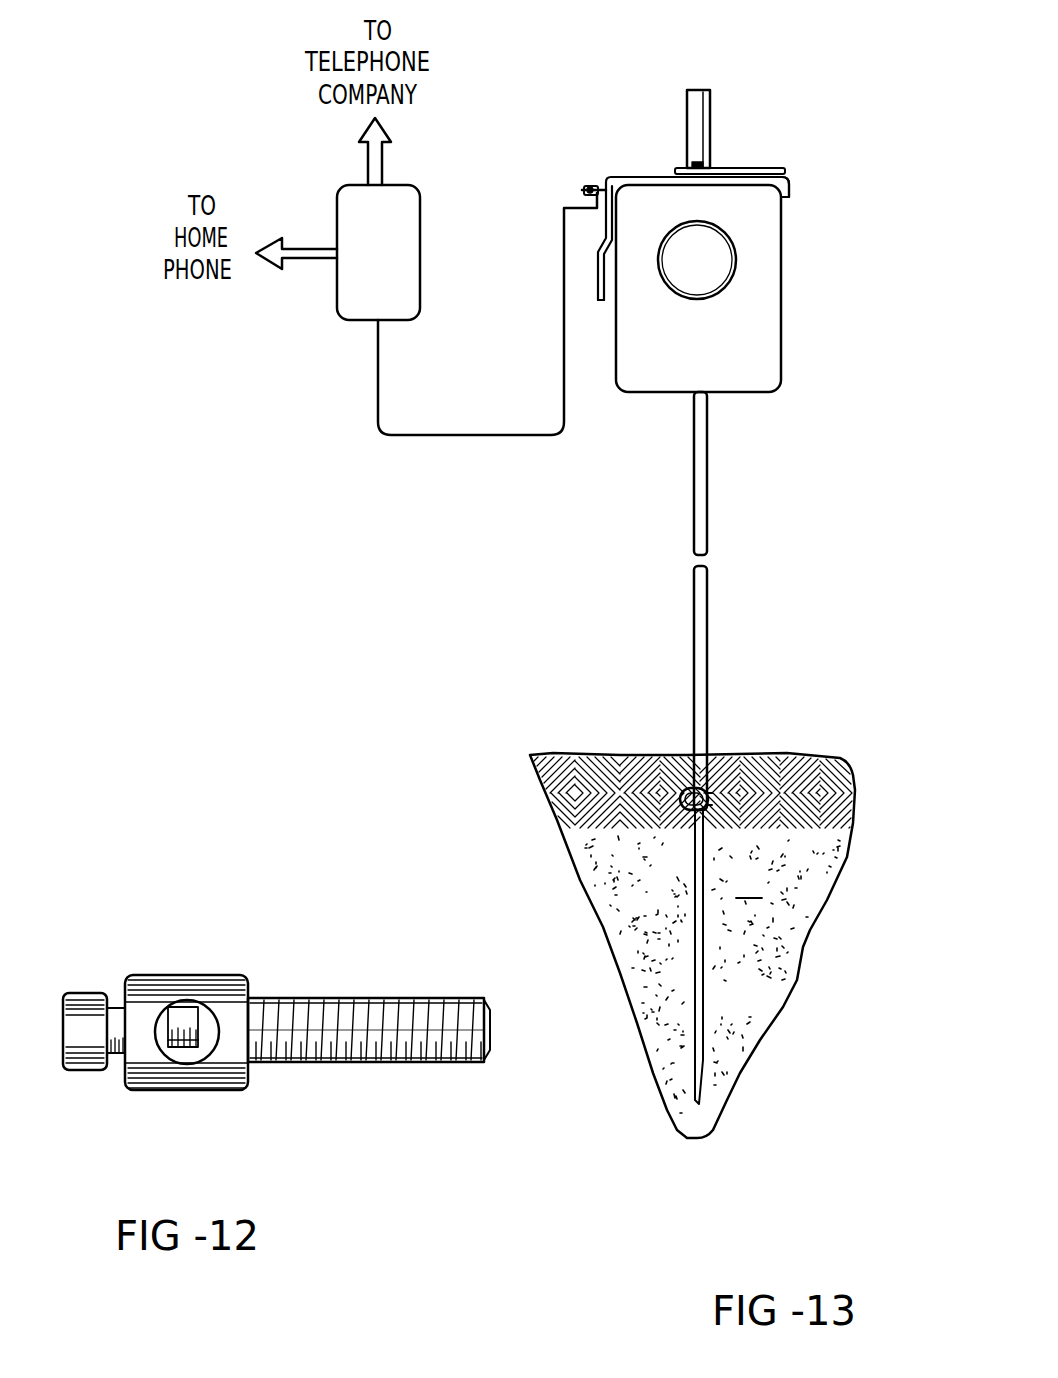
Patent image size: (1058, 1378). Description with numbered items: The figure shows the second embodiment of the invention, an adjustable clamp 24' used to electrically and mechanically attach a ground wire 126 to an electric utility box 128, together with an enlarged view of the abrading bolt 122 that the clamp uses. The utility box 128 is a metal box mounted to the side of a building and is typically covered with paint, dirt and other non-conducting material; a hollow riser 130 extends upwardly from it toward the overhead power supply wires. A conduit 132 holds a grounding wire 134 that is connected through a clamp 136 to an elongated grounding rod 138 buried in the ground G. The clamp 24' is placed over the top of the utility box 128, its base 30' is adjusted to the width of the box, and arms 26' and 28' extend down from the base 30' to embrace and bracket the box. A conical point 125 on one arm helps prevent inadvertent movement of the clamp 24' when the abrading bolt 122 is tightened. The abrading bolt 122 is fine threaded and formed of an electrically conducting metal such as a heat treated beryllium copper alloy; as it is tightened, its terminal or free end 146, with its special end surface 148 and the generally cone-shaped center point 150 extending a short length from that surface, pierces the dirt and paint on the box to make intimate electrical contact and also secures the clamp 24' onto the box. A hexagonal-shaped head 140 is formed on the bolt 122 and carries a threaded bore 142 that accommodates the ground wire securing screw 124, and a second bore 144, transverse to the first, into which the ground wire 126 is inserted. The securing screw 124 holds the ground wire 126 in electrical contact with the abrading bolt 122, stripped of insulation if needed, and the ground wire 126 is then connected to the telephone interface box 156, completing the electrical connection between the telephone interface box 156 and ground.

In FIG. 13, the abrading bolt 122 is at (595, 185).
In FIG. 12, the abrading bolt 122 is at (357, 1062).
In FIG. 13, the ground wire securing screw 124 is at (583, 188).
In FIG. 12, the ground wire securing screw 124 is at (85, 1070).
In FIG. 13, the conical point 125 is at (783, 203).
In FIG. 13, the ground wire 126 is at (525, 437).
In FIG. 13, the electric utility box 128 is at (737, 367).
In FIG. 13, the hollow riser 130 is at (708, 81).
In FIG. 13, the conduit 132 is at (710, 625).
In FIG. 13, the grounding wire 134 is at (690, 786).
In FIG. 13, the clamp 136 is at (739, 763).
In FIG. 13, the elongated grounding rod 138 is at (700, 995).
In FIG. 12, the hexagonal-shaped head 140 is at (245, 975).
In FIG. 12, the bore 142 is at (118, 1010).
In FIG. 12, the second bore 144 is at (182, 1003).
In FIG. 12, the terminal or free end 146 is at (480, 998).
In FIG. 12, the end surface 148 is at (484, 1065).
In FIG. 12, the center point 150 is at (490, 1030).
In FIG. 13, the telephone interface box 156 is at (350, 322).
In FIG. 13, the adjustable clamp 24' is at (744, 141).
In FIG. 13, the arm 26' is at (823, 177).
In FIG. 13, the arm 28' is at (590, 329).
In FIG. 13, the base 30' is at (693, 211).